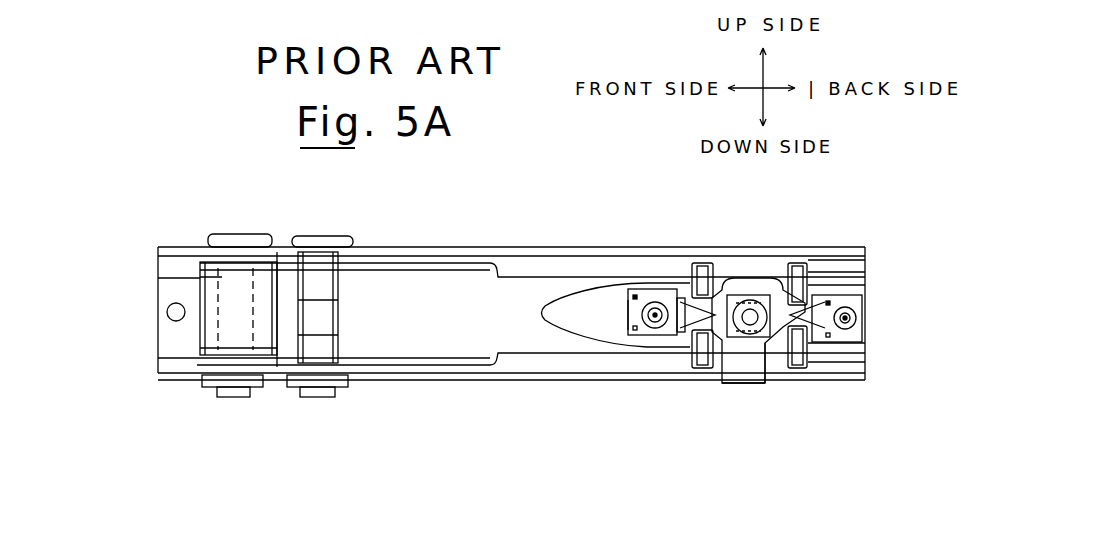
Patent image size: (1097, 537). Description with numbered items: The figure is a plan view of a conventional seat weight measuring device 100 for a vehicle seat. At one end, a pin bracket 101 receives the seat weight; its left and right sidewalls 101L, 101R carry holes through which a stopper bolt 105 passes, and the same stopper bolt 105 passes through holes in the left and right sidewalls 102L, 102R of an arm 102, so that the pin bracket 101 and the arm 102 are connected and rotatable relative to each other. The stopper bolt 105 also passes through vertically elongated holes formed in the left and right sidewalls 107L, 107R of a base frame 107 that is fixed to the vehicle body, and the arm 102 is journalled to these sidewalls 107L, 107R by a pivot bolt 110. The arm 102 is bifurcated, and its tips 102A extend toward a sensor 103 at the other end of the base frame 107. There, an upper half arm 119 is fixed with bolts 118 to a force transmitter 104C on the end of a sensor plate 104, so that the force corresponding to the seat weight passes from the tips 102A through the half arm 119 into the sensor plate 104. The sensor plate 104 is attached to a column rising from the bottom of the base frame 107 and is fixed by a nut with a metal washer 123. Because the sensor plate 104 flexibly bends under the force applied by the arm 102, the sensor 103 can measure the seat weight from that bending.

The seat weight measuring device 100 is at (553, 214).
The pin bracket 101 is at (200, 288).
The right sidewall of pin bracket 101R is at (157, 278).
The left sidewall of pin bracket 101L is at (236, 352).
The arm 102 is at (466, 292).
The right sidewall of arm 102R is at (278, 252).
The left sidewall of arm 102L is at (357, 375).
The tips of arm 102A is at (670, 357).
The sensor 103 is at (753, 394).
The sensor plate 104 is at (745, 287).
The force transmitter 104C is at (627, 314).
The stopper bolt 105 is at (226, 396).
The base frame 107 is at (167, 266).
The right sidewall of base frame 107R is at (200, 252).
The left sidewall of base frame 107L is at (163, 382).
The pivot bolt 110 is at (328, 316).
The bolts 118 is at (853, 322).
The upper half arm 119 is at (797, 268).
The metal washer 123 is at (762, 362).